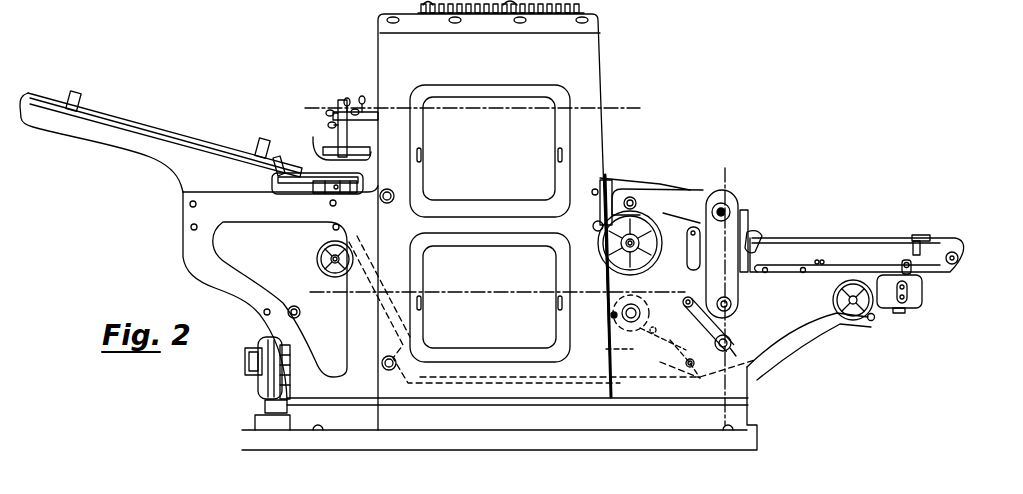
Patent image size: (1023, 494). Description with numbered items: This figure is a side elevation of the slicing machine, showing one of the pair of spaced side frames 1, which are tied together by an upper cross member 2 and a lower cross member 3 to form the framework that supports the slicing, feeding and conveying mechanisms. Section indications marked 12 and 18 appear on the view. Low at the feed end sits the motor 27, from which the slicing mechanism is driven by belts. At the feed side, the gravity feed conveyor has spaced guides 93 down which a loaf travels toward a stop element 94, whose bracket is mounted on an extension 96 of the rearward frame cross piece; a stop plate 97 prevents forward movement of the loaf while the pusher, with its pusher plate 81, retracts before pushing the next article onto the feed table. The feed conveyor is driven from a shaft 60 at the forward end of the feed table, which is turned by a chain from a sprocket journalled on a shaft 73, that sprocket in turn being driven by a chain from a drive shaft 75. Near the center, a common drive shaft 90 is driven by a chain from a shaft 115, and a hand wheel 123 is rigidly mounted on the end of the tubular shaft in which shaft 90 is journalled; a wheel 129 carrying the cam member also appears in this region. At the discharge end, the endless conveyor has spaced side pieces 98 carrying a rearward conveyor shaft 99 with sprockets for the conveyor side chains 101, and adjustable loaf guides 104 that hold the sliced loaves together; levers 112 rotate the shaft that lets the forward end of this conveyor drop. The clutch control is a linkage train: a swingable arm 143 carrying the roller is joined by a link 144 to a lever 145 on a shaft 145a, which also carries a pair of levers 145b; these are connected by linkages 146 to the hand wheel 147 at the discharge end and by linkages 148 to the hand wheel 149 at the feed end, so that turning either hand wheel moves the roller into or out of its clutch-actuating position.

The side frames 1 is at (451, 71).
The upper cross member 2 is at (378, 26).
The lower cross member 3 is at (560, 418).
The section line 12- 12 is at (310, 285).
The section line 18- 18 is at (305, 103).
The motor 27 is at (258, 381).
The shaft 60 is at (637, 204).
The shaft 73 is at (733, 211).
The drive shaft 75 is at (733, 305).
The pusher plate 81 is at (318, 189).
The common drive shaft 90 is at (605, 237).
The guides 93 is at (174, 124).
The stop element 94 is at (342, 128).
The extension 96 is at (358, 123).
The stop plate 97 is at (270, 170).
The side pieces 98 is at (873, 250).
The rearward conveyor shaft 99 is at (962, 260).
The conveyor side chains 101 is at (922, 273).
The adjustable loaf guides 104 is at (950, 233).
The levers 112 is at (729, 326).
The shaft 115 is at (616, 317).
The hand wheel 123 is at (620, 249).
The wheel 129 is at (655, 210).
The swingable arm 143 is at (674, 332).
The link 144 is at (602, 350).
The lever 145 is at (699, 352).
The shaft 145a is at (686, 364).
The levers 145b is at (745, 377).
The linkages 146 is at (797, 347).
The hand wheel 147 is at (866, 320).
The linkages 148 is at (484, 378).
The hand wheel 149 is at (318, 262).